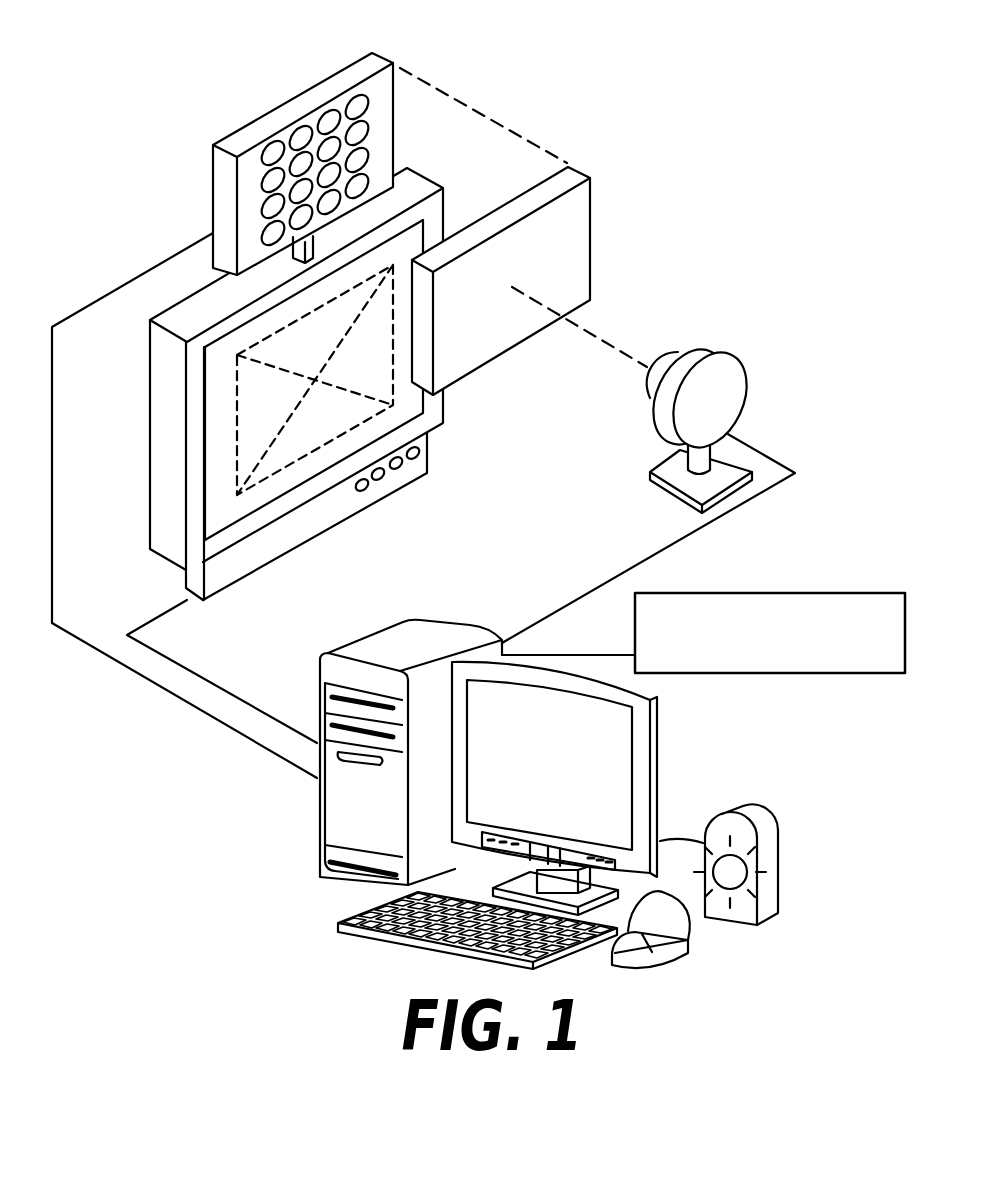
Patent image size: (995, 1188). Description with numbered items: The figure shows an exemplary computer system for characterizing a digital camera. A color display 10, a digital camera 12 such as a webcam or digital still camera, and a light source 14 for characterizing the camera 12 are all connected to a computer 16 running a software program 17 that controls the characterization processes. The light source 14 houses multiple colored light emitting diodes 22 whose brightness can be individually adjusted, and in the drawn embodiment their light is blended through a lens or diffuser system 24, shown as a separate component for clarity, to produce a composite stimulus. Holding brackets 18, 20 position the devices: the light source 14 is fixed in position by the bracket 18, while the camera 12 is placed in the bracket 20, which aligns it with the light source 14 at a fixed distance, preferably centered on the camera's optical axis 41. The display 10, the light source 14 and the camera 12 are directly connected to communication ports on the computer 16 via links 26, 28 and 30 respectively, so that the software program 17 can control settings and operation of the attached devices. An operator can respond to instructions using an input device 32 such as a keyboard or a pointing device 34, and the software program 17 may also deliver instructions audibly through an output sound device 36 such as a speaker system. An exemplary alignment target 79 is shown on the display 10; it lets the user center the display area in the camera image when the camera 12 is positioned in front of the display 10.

The color display 10 is at (445, 405).
The digital camera 12 is at (715, 350).
The light source 14 is at (383, 53).
The computer 16 is at (443, 617).
The software program 17 is at (745, 593).
The holding bracket 18 is at (293, 245).
The holding bracket 20 is at (677, 472).
The light emitting diodes 22 is at (387, 118).
The lens or diffuser system 24 is at (583, 170).
The link 26 is at (230, 693).
The link 28 is at (110, 297).
The link 30 is at (773, 457).
The input device 32 is at (393, 943).
The pointing device 34 is at (658, 955).
The output sound device 36 is at (760, 812).
The optical axis 41 is at (605, 335).
The alignment target 79 is at (324, 443).